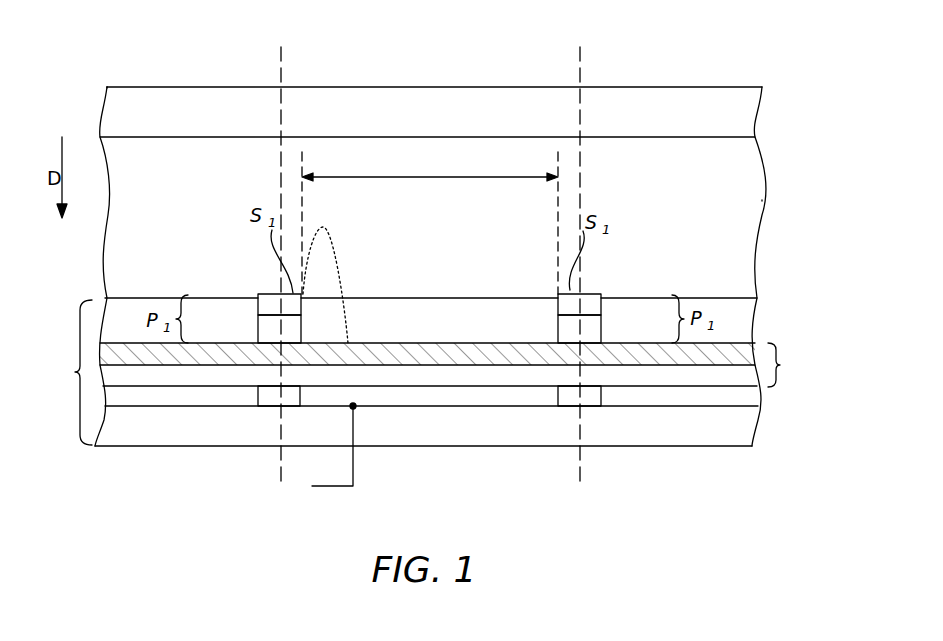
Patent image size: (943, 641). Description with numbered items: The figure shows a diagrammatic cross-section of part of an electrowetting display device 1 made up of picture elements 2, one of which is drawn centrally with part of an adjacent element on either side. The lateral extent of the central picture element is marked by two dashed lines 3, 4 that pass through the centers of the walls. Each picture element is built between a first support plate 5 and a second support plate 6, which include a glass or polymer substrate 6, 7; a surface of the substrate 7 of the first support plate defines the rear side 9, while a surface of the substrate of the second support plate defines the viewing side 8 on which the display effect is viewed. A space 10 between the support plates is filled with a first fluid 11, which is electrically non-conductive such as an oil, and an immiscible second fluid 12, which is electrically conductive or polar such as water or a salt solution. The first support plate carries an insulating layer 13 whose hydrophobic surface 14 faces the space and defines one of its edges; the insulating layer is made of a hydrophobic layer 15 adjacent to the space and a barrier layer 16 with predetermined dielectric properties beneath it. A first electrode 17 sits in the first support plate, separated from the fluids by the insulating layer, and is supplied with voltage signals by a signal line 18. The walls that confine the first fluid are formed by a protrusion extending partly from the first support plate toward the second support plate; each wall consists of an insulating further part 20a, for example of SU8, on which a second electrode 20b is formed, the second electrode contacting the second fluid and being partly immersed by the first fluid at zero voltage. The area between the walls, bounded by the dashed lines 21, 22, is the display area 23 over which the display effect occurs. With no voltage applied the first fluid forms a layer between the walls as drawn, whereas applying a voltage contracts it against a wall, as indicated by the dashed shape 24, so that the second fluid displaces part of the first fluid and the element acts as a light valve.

The electrowetting display device 1 is at (797, 22).
The picture element 2 is at (423, 22).
The dashed line 3 is at (280, 57).
The dashed line 4 is at (582, 57).
The first support plate 5 is at (71, 372).
The second support plate 6 is at (757, 110).
The substrate 7 is at (665, 432).
The viewing side 8 is at (383, 86).
The rear side 9 is at (428, 447).
The space 10 is at (478, 147).
The first fluid 11 is at (378, 307).
The second fluid 12 is at (755, 210).
The insulating layer 13 is at (788, 365).
The hydrophobic surface 14 is at (515, 345).
The hydrophobic layer 15 is at (468, 355).
The barrier layer 16 is at (422, 375).
The first electrode 17 is at (490, 400).
The signal line 18 is at (330, 488).
The further part of the protrusion 20a is at (258, 328).
The second electrode 20b is at (265, 293).
The dashed line 21 is at (302, 157).
The dashed line 22 is at (558, 157).
The display area 23 is at (430, 167).
The dashed shape 24 is at (337, 232).